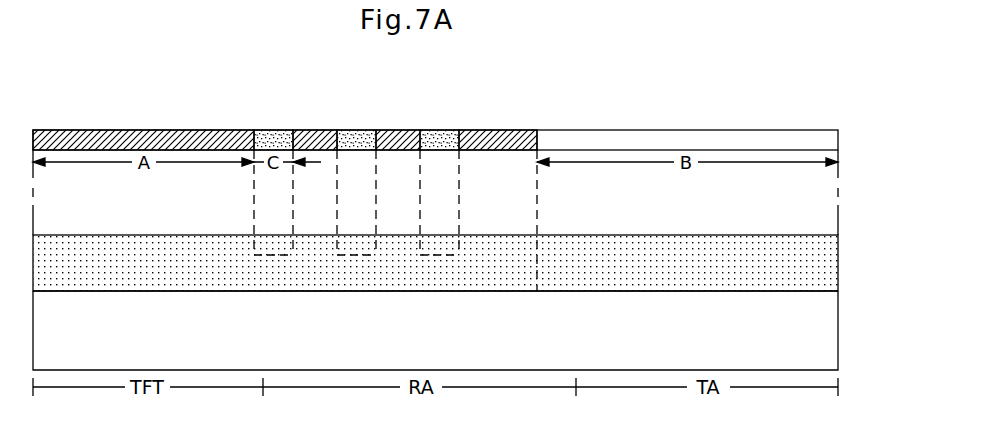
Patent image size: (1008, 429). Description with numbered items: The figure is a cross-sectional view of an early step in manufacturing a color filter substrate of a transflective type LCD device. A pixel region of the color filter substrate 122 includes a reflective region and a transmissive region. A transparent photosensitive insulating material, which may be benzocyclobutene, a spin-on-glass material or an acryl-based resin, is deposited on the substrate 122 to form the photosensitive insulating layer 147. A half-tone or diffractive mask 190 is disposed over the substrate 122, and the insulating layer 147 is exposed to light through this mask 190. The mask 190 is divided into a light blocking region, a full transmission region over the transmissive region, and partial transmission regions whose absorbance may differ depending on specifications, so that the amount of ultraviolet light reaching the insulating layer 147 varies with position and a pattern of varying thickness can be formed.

The half-tone mask 190 is at (838, 143).
The photosensitive insulating layer 147 is at (827, 260).
The color filter substrate 122 is at (451, 341).